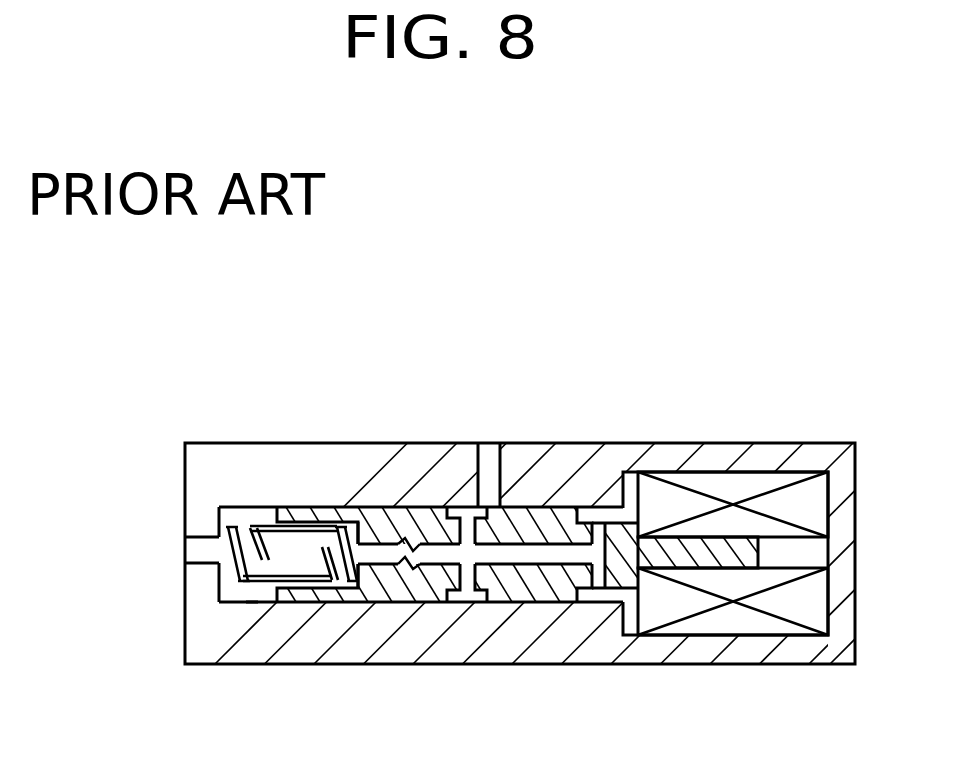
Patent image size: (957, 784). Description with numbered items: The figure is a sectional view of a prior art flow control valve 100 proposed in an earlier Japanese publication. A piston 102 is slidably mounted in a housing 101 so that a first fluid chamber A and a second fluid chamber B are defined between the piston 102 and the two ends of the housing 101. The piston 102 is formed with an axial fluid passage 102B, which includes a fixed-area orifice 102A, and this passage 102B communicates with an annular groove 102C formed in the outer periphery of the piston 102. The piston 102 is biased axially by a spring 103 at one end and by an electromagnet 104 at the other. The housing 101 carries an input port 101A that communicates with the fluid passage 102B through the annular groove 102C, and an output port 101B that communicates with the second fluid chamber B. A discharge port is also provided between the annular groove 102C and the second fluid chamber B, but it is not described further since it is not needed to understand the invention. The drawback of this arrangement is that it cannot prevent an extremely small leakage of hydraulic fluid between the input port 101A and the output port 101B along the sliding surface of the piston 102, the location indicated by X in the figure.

The flow control valve 100 is at (581, 438).
The housing 101 is at (211, 462).
The input port 101A is at (488, 452).
The output port 101B is at (196, 550).
The piston 102 is at (447, 562).
The fixed-area orifice 102A is at (405, 566).
The axial fluid passage 102B is at (535, 557).
The annular groove 102C is at (458, 515).
The spring 103 is at (228, 583).
The electromagnet 104 is at (718, 625).
The first fluid chamber A is at (614, 600).
The second fluid chamber B is at (252, 600).
The sliding surface of the piston X is at (428, 614).